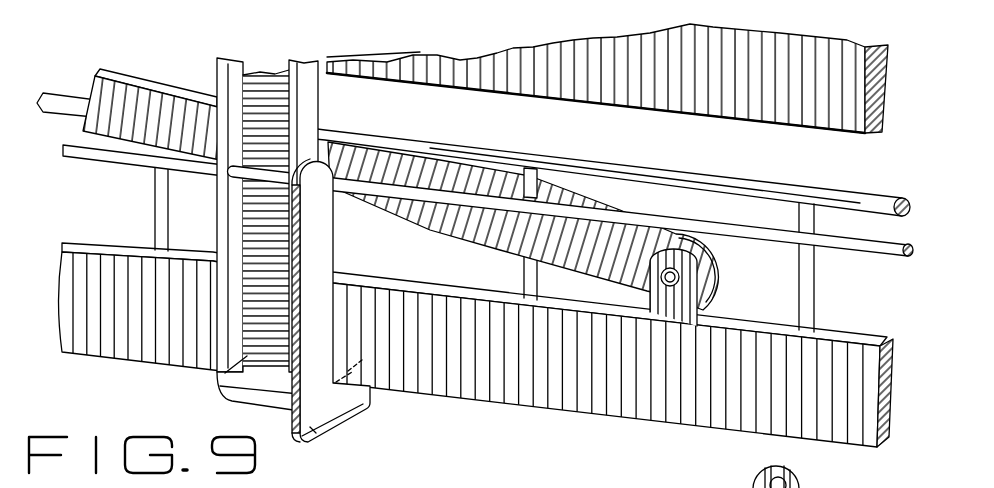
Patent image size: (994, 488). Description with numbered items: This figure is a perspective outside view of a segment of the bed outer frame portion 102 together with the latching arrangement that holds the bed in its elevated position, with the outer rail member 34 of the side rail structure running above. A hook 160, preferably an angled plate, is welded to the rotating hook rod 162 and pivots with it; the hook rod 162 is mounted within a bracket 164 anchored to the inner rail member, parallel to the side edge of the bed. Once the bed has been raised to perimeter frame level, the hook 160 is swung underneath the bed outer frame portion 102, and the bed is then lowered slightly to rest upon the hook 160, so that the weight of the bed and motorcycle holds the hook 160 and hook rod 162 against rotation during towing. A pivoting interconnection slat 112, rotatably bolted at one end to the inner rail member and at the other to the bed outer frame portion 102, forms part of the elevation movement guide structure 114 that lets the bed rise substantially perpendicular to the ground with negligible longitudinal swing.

The outer rail member 34 is at (338, 63).
The elevation movement guide structure 114 is at (160, 106).
The bracket 164 is at (232, 216).
The hook 160 is at (323, 396).
The hook rod 162 is at (773, 234).
The bed outer frame portion 102 is at (606, 418).
The interconnection slat 112 is at (792, 364).